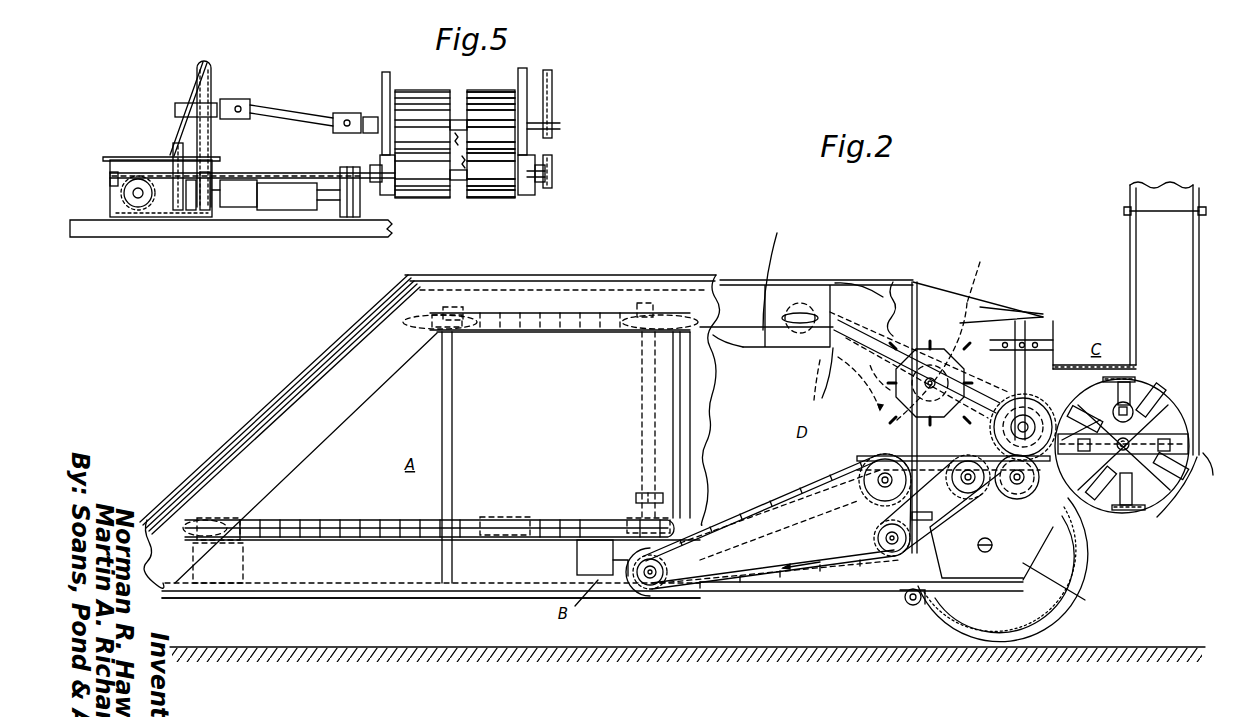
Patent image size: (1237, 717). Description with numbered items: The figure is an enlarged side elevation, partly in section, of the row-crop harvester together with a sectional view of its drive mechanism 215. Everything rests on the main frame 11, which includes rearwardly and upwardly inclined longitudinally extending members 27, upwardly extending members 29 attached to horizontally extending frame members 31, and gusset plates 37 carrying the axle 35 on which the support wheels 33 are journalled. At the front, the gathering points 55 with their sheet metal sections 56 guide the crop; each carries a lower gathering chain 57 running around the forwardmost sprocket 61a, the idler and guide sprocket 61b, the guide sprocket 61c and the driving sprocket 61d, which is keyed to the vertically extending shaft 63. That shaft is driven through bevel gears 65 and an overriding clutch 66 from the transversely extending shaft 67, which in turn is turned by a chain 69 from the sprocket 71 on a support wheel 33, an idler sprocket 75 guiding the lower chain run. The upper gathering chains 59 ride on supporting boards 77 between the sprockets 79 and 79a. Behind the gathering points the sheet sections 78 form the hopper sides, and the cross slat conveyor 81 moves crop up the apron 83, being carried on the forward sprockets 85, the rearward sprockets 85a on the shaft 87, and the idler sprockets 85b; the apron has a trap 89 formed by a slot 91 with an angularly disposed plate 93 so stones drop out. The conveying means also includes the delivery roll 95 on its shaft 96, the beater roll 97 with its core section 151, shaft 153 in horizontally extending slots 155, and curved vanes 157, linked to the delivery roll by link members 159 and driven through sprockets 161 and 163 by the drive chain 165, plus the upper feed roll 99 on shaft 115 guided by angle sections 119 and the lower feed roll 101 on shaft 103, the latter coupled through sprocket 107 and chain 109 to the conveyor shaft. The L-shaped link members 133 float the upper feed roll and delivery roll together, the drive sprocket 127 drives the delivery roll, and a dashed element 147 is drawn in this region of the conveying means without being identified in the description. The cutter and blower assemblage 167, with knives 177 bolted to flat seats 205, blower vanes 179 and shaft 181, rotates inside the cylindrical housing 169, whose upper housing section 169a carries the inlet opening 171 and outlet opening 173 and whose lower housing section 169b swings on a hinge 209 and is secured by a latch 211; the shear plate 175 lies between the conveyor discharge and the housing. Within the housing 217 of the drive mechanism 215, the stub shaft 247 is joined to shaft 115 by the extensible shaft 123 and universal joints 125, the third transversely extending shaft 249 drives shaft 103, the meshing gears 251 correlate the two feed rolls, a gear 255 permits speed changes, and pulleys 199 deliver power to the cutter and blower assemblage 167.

In FIG. 2, the main frame 11 is at (810, 594).
In FIG. 2, the longitudinally extending members 27 is at (840, 480).
In FIG. 2, the upwardly extending members 29 is at (453, 452).
In FIG. 2, the horizontally extending frame members 31 is at (530, 592).
In FIG. 2, the support wheels 33 is at (1074, 616).
In FIG. 2, the axle 35 is at (978, 545).
In FIG. 2, the gusset plates 37 is at (1064, 588).
In FIG. 2, the gathering points 55 is at (266, 392).
In FIG. 2, the sheet metal sections 56 is at (562, 275).
In FIG. 2, the lower gathering chains 57 is at (410, 537).
In FIG. 2, the upper gathering chains 59 is at (548, 332).
In FIG. 2, the forwardmost sprocket 61a is at (214, 518).
In FIG. 2, the idler and guide sprocket 61b is at (498, 517).
In FIG. 2, the guide sprocket 61c is at (578, 532).
In FIG. 2, the driving sprocket 61d is at (630, 517).
In FIG. 2, the vertically extending shaft 63 is at (642, 387).
In FIG. 2, the bevel gears 65 is at (617, 577).
In FIG. 2, the overriding clutch 66 is at (640, 493).
In FIG. 2, the transversely extending shaft 67 is at (652, 578).
In FIG. 2, the chain 69 is at (908, 606).
In FIG. 2, the sprocket 71 is at (1008, 604).
In FIG. 2, the idler sprocket 75 is at (902, 604).
In FIG. 2, the supporting board 77 is at (517, 332).
In FIG. 5, the sheet sections 78 is at (382, 84).
In FIG. 2, the sheet sections 78 is at (912, 282).
In FIG. 2, the sprocket 79 is at (445, 300).
In FIG. 2, the sprocket 79a is at (662, 303).
In FIG. 2, the cross slat conveyor 81 is at (771, 492).
In FIG. 2, the apron 83 is at (866, 476).
In FIG. 2, the forward sprockets 85 is at (645, 588).
In FIG. 2, the rearward sprockets 85a is at (955, 456).
In FIG. 2, the idler sprockets 85b is at (878, 536).
In FIG. 2, the shaft 87 is at (955, 477).
In FIG. 2, the trap 89 is at (810, 482).
In FIG. 2, the slot 91 is at (790, 508).
In FIG. 2, the angularly disposed plate 93 is at (855, 500).
In FIG. 2, the delivery roll 95 is at (890, 400).
In FIG. 2, the shaft 96 is at (1010, 320).
In FIG. 2, the beater roll 97 is at (795, 352).
In FIG. 5, the upper feed roll 99 is at (432, 92).
In FIG. 2, the upper feed roll 99 is at (1034, 397).
In FIG. 5, the lower feed roll 101 is at (495, 180).
In FIG. 2, the lower feed roll 101 is at (983, 500).
In FIG. 5, the shaft 103 is at (391, 197).
In FIG. 5, the sprocket 107 is at (552, 176).
In FIG. 5, the chain 109 is at (552, 158).
In FIG. 5, the shaft 115 is at (457, 118).
In FIG. 5, the angle sections 119 is at (368, 117).
In FIG. 5, the extensible shaft 123 is at (290, 110).
In FIG. 5, the universal joints 125 is at (240, 100).
In FIG. 5, the drive sprocket 127 is at (560, 128).
In FIG. 2, the L-shaped link members 133 is at (1000, 456).
In FIG. 2, the chain 147 is at (948, 333).
In FIG. 2, the core section 151 is at (777, 300).
In FIG. 2, the shaft 153 is at (812, 318).
In FIG. 2, the horizontally extending slots 155 is at (806, 310).
In FIG. 2, the curved vanes 157 is at (773, 234).
In FIG. 2, the link members 159 is at (878, 365).
In FIG. 2, the sprocket 161 is at (903, 420).
In FIG. 2, the sprocket 163 is at (830, 288).
In FIG. 5, the drive chain 165 is at (552, 85).
In FIG. 2, the drive chain 165 is at (866, 387).
In FIG. 2, the cutter and blower assemblage 167 is at (1150, 505).
In FIG. 2, the cylindrical housing 169 is at (1122, 458).
In FIG. 2, the upper housing section 169a is at (1064, 365).
In FIG. 2, the lower housing section 169b is at (1090, 522).
In FIG. 2, the inlet opening 171 is at (1068, 402).
In FIG. 2, the outlet opening 173 is at (1160, 294).
In FIG. 2, the shear plate 175 is at (1007, 499).
In FIG. 2, the knives 177 is at (1112, 378).
In FIG. 2, the blower vanes 179 is at (1150, 392).
In FIG. 2, the shaft 181 is at (1155, 416).
In FIG. 5, the pulleys 199 is at (343, 205).
In FIG. 2, the flat seats 205 is at (1137, 380).
In FIG. 5, the hinge 209 is at (300, 153).
In FIG. 2, the hinge 209 is at (1195, 450).
In FIG. 2, the latch 211 is at (1065, 528).
In FIG. 5, the harvester drive mechanism 215 is at (142, 139).
In FIG. 5, the housing 217 is at (132, 158).
In FIG. 5, the stub shaft 247 is at (197, 82).
In FIG. 5, the third transversely extending shaft 249 is at (120, 188).
In FIG. 5, the meshing gears 251 is at (212, 154).
In FIG. 5, the gear 255 is at (110, 176).